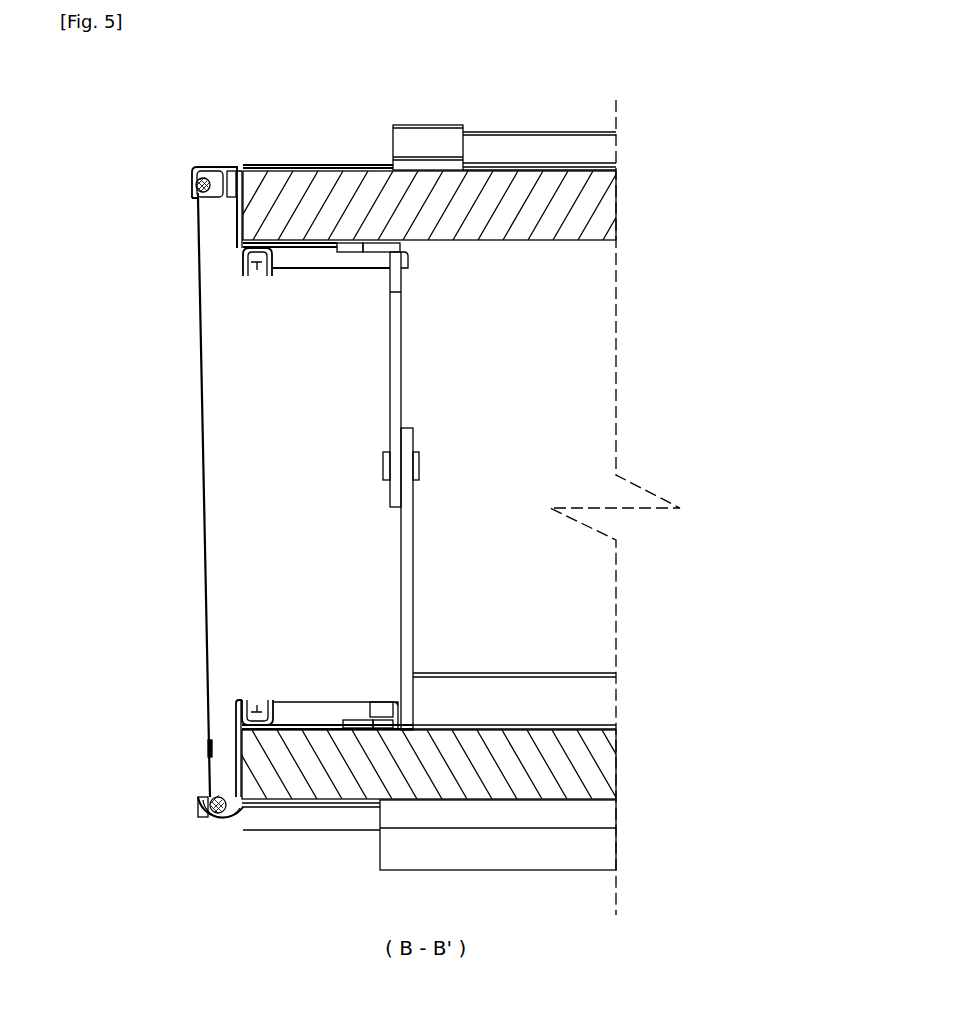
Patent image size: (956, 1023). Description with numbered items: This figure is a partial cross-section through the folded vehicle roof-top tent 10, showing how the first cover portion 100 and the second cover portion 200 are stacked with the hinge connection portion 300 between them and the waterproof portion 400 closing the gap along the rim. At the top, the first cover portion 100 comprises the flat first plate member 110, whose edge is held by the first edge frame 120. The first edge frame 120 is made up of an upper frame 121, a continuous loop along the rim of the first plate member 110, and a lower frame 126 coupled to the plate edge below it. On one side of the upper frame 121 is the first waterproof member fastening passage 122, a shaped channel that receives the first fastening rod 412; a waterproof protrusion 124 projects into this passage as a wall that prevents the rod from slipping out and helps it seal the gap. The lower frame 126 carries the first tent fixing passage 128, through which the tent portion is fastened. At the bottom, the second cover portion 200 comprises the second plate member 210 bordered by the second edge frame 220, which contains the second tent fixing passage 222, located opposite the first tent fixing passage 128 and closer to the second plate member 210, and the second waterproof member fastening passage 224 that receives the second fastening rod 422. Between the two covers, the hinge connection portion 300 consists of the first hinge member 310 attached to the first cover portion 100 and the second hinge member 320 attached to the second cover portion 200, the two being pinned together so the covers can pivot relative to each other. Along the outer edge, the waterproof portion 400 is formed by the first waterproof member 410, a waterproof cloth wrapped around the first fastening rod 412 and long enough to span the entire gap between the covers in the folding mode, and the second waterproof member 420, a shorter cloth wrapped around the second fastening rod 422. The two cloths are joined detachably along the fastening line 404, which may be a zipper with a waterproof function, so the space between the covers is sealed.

The vehicle roof-top tent 10 is at (428, 89).
The first cover portion 100 is at (563, 128).
The first plate member 110 is at (532, 190).
The first edge frame 120 is at (190, 210).
The upper frame 121 is at (193, 168).
The first waterproof member fastening passage 122 is at (215, 172).
The waterproof protrusion 124 is at (205, 200).
The lower frame 126 is at (237, 233).
The first tent fixing passage 128 is at (230, 259).
The second cover portion 200 is at (531, 722).
The second plate member 210 is at (597, 762).
The second edge frame 220 is at (207, 776).
The second tent fixing passage 222 is at (255, 712).
The second waterproof member fastening passage 224 is at (221, 822).
The hinge connection portion 300 is at (407, 486).
The first hinge member 310 is at (397, 372).
The second hinge member 320 is at (376, 579).
The waterproof portion 400 is at (149, 500).
The fastening line 404 is at (208, 747).
The first waterproof member 410 is at (199, 347).
The first fastening rod 412 is at (196, 185).
The second waterproof member 420 is at (149, 806).
The second fastening rod 422 is at (206, 792).